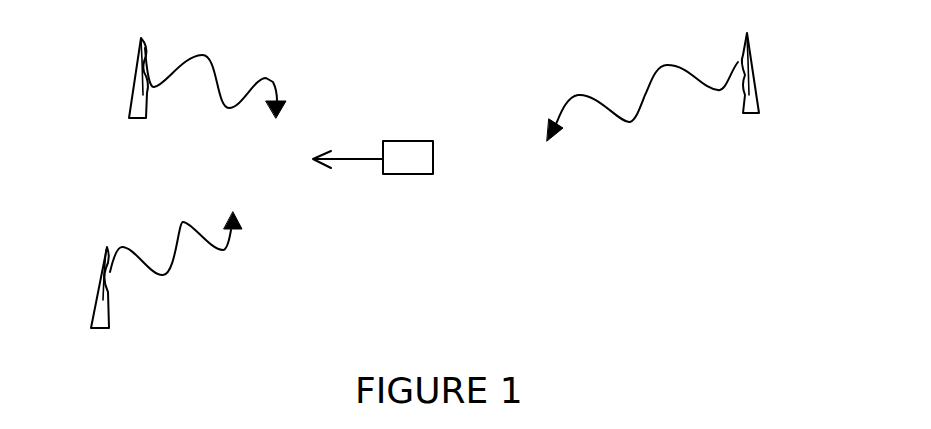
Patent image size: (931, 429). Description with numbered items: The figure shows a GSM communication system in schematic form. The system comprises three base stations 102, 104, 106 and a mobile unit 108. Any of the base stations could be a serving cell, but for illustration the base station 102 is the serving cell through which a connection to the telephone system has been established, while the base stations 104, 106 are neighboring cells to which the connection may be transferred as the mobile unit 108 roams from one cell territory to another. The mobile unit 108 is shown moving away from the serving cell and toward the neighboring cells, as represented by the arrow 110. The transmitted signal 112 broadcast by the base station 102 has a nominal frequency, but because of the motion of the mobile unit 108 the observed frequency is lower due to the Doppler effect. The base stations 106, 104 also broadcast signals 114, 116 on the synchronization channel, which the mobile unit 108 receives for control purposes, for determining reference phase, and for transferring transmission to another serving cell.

The base station 102 is at (757, 103).
The base station 104 is at (137, 70).
The base station 106 is at (98, 292).
The mobile unit 108 is at (457, 172).
The arrow 110 is at (368, 124).
The transmitted signal 112 is at (642, 117).
The signal 114 is at (219, 243).
The signal 116 is at (255, 81).